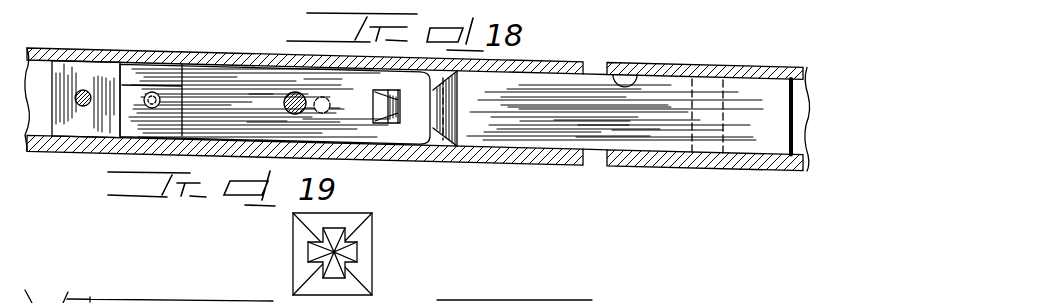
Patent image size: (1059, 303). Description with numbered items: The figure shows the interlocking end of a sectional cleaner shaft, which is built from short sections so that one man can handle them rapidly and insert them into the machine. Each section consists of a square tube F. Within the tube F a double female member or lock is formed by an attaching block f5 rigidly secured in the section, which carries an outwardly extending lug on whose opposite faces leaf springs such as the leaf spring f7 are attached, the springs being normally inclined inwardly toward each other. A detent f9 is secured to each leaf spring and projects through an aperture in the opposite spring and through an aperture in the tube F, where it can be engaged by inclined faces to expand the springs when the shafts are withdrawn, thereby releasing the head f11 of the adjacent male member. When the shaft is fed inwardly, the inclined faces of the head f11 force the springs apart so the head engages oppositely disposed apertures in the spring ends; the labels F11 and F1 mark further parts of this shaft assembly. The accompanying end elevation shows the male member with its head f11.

In FIG. 18, the square tube F is at (170, 42).
In FIG. 18, the attaching block f5 is at (100, 70).
In FIG. 18, the leaf spring f7 is at (205, 98).
In FIG. 18, the detent f9 is at (318, 163).
In FIG. 18, the head of male member f11 is at (386, 118).
In FIG. 19, the head of male member f11 is at (357, 250).
In FIG. 18, the inner sleeve F11 is at (523, 97).
In FIG. 19, the inner sleeve F11 is at (300, 242).
In FIG. 18, the stop lug F1 is at (638, 80).